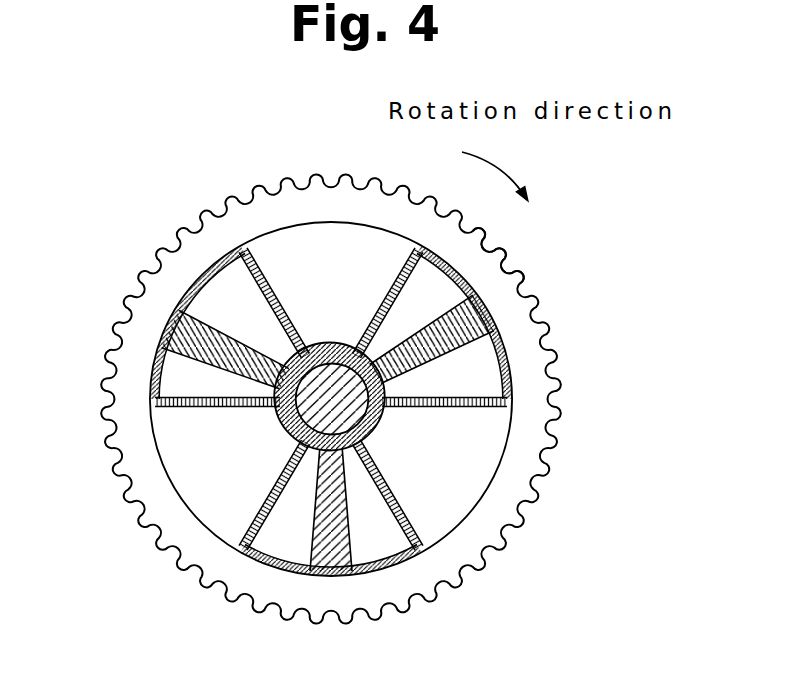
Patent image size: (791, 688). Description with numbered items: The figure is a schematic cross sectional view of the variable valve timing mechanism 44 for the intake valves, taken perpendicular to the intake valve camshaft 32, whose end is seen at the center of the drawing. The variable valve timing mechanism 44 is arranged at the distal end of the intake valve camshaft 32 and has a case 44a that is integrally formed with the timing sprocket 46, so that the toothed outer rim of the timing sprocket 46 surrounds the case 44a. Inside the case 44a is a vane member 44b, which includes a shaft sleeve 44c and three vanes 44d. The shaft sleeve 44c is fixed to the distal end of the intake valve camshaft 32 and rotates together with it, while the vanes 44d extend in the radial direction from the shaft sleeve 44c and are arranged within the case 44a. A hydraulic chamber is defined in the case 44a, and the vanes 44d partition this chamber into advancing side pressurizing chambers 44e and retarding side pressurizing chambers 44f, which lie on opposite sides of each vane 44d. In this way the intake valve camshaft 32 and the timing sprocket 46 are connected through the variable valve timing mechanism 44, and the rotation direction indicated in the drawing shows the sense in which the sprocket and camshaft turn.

The variable valve timing mechanism 44 is at (591, 188).
The case 44a is at (431, 250).
The vane member 44b is at (214, 296).
The shaft sleeve 44c is at (330, 346).
The vanes 44d is at (469, 325).
The advancing side pressurizing chambers 44e is at (401, 300).
The retarding side pressurizing chambers 44f is at (266, 288).
The timing sprocket 46 is at (487, 259).
The intake valve camshaft 32 is at (342, 410).